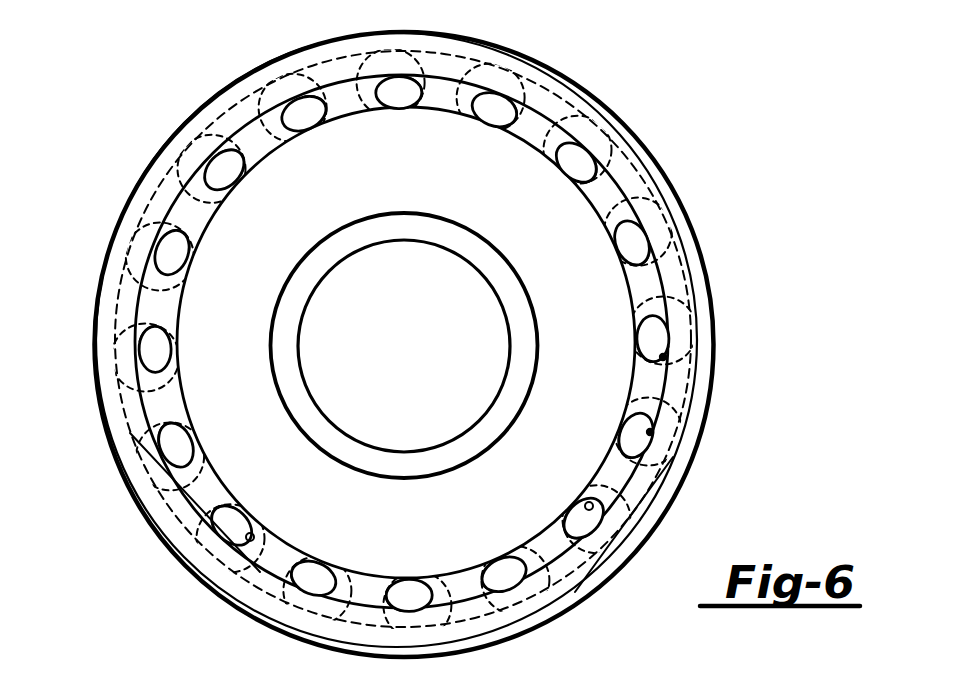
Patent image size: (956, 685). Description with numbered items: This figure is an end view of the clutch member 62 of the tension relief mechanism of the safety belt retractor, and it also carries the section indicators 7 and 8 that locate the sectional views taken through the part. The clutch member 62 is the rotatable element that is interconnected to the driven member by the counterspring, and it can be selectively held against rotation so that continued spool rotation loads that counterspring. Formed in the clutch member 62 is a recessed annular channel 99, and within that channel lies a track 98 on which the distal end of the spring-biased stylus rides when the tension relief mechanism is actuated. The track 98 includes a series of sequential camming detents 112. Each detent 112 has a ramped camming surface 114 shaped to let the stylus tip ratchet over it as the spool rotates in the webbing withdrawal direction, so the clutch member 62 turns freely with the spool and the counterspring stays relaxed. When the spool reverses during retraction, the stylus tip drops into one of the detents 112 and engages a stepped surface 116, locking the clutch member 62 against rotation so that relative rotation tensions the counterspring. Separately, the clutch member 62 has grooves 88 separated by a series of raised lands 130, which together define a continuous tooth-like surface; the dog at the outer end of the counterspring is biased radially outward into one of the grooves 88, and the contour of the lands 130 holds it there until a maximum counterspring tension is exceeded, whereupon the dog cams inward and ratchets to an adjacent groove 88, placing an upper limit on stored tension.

The clutch member 62 is at (672, 160).
The grooves 88 is at (593, 232).
The track 98 is at (537, 553).
The recessed annular channel 99 is at (258, 570).
The camming detents 112 is at (258, 510).
The ramped camming surface 114 is at (225, 498).
The stepped surface 116 is at (254, 535).
The raised lands 130 is at (665, 359).
The section line 7- 7 is at (276, 130).
The section line 8- 8 is at (75, 345).